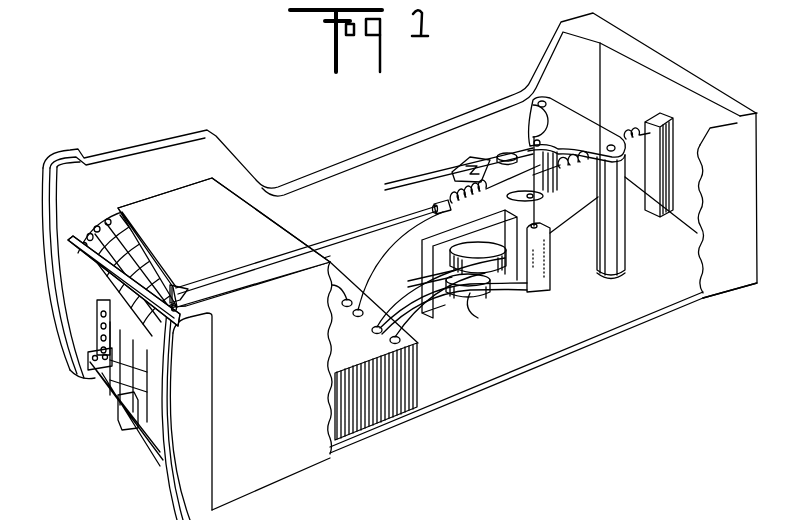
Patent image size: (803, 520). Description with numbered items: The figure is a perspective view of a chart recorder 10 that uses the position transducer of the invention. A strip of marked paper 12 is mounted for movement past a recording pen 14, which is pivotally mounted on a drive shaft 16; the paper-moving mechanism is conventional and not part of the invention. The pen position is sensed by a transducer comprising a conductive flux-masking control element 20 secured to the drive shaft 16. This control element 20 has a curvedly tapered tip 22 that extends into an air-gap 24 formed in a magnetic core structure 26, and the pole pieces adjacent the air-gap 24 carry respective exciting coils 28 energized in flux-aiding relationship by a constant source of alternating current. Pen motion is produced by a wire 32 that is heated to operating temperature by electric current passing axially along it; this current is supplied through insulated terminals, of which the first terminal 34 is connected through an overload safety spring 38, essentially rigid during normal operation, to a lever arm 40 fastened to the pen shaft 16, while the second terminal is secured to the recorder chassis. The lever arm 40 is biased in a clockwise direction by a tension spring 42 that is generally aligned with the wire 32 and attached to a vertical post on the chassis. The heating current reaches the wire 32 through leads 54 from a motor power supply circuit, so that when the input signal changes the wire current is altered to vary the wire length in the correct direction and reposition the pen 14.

The chart recorder 10 is at (310, 122).
The strip of marked paper 12 is at (130, 372).
The recording pen 14 is at (179, 285).
The drive shaft 16 is at (531, 144).
The conductive flux-masking control element 20 is at (545, 262).
The curvedly tapered tip 22 is at (490, 280).
The air-gap 24 is at (430, 275).
The magnetic core structure 26 is at (425, 256).
The exciting coils 28 is at (490, 243).
The wire 32 is at (345, 240).
The first insulated terminal 34 is at (437, 205).
The overload safety spring 38 is at (457, 200).
The lever arm 40 is at (547, 197).
The tension spring 42 is at (623, 137).
The leads 54 is at (364, 290).